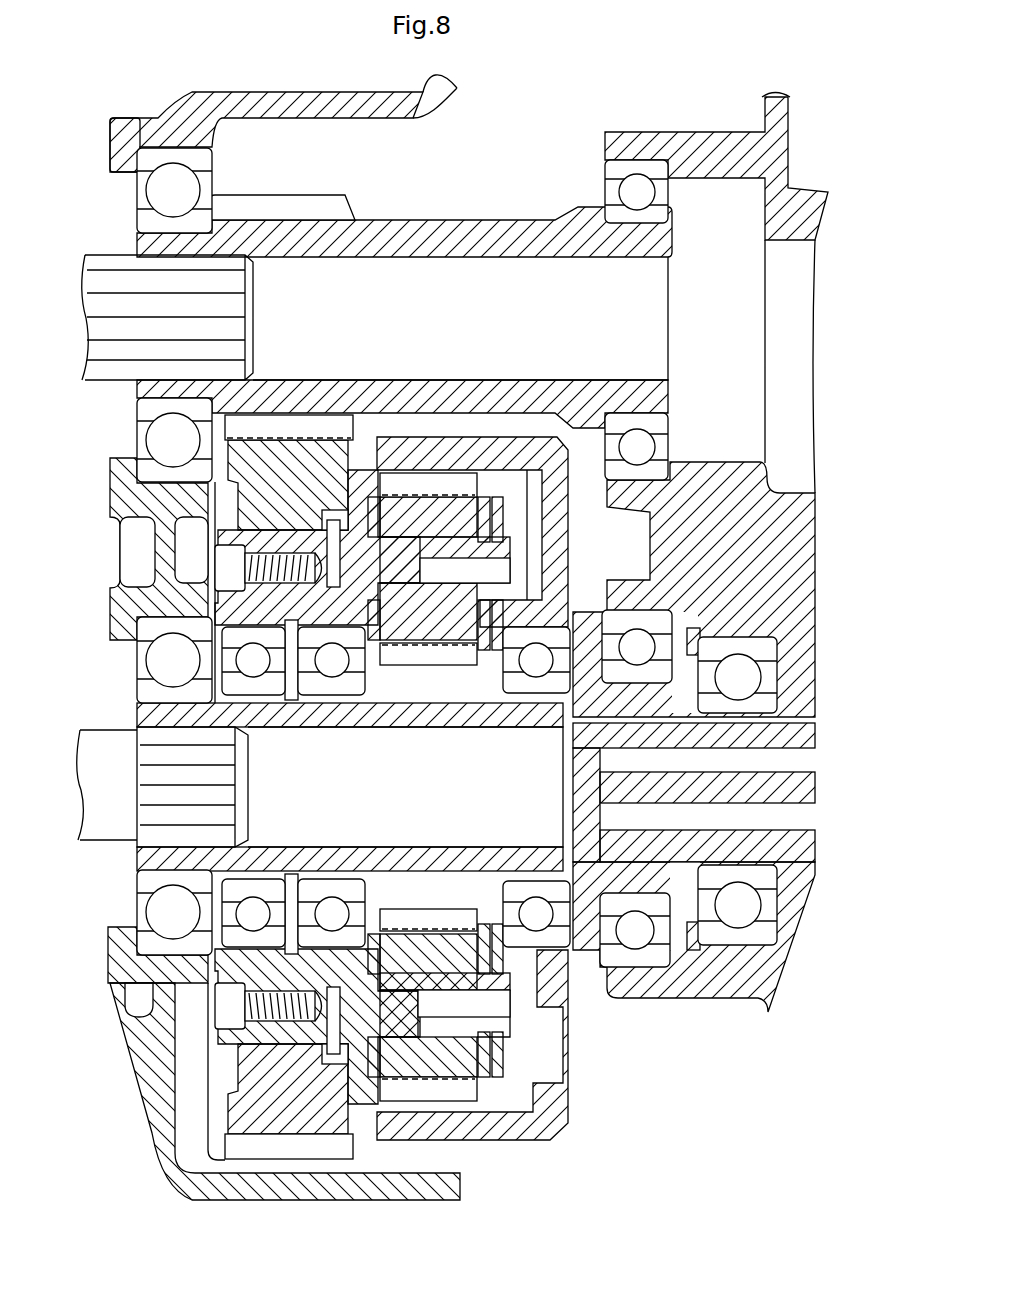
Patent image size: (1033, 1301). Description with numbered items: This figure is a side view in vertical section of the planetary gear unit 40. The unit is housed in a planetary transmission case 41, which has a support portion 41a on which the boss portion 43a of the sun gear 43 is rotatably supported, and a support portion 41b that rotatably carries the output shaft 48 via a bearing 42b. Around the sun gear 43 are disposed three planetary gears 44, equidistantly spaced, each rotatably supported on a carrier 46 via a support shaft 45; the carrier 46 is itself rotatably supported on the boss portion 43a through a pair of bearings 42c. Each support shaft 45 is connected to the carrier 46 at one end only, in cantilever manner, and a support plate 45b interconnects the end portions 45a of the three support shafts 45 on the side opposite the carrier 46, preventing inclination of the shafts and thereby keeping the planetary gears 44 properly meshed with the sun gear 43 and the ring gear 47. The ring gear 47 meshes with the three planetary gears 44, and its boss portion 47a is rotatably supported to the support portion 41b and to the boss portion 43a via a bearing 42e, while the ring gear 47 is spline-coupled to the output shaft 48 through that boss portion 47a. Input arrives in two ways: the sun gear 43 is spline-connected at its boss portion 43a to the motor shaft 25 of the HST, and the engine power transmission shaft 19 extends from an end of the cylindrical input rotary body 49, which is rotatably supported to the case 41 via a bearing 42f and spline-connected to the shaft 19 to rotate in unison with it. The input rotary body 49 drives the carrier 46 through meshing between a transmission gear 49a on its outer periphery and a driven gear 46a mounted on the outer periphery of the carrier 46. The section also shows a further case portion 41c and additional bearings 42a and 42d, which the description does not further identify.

The engine power transmission shaft 19 is at (232, 306).
The motor shaft 25 is at (108, 838).
The planetary gear unit 40 is at (533, 1155).
The planetary transmission case 41 is at (286, 92).
The support portion 41a is at (157, 550).
The support portion 41b is at (683, 987).
The housing cover portion 41c is at (122, 148).
The bearing 42a is at (175, 660).
The bearing 42b is at (742, 913).
The bearings 42c is at (313, 683).
The bearing 42d is at (633, 643).
The bearing 42e is at (535, 917).
The bearing 42f is at (175, 193).
The sun gear 43 is at (485, 1018).
The boss portion 43a is at (327, 853).
The planetary gears 44 is at (443, 480).
The support shaft 45 is at (400, 537).
The end portions 45a is at (507, 550).
The support plate 45b is at (497, 507).
The carrier 46 is at (290, 1115).
The driven gear 46a is at (305, 425).
The ring gear 47 is at (563, 1120).
The boss portion 47a is at (628, 883).
The output shaft 48 is at (559, 801).
The input rotary body 49 is at (463, 232).
The transmission gear 49a is at (287, 203).